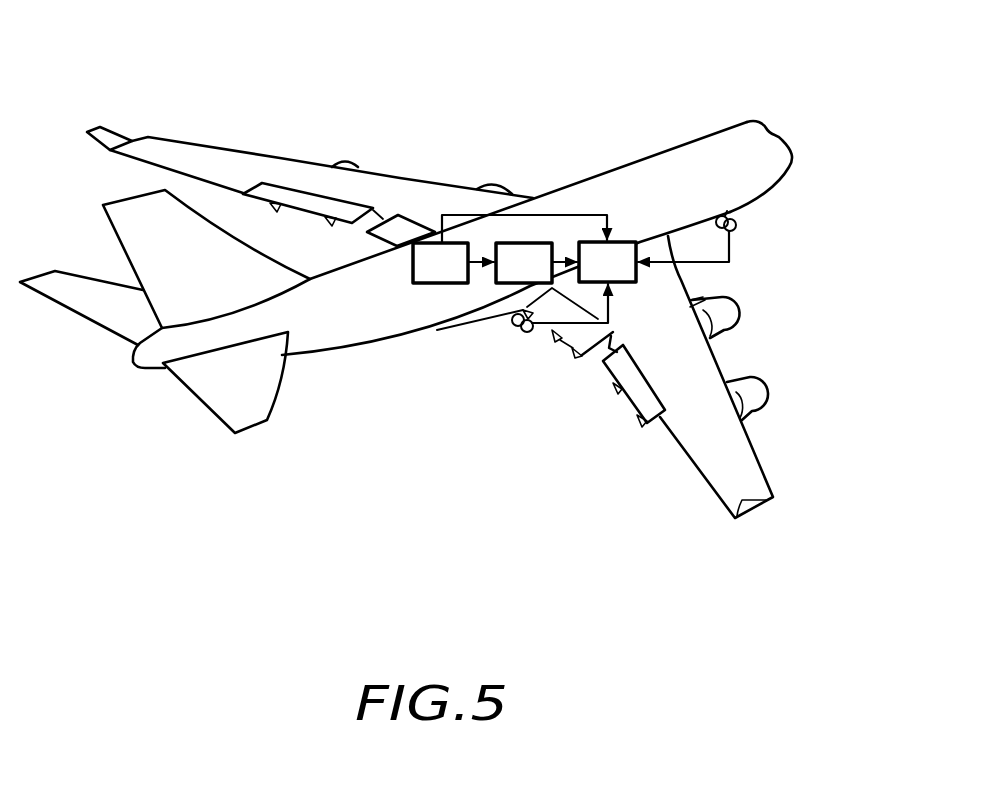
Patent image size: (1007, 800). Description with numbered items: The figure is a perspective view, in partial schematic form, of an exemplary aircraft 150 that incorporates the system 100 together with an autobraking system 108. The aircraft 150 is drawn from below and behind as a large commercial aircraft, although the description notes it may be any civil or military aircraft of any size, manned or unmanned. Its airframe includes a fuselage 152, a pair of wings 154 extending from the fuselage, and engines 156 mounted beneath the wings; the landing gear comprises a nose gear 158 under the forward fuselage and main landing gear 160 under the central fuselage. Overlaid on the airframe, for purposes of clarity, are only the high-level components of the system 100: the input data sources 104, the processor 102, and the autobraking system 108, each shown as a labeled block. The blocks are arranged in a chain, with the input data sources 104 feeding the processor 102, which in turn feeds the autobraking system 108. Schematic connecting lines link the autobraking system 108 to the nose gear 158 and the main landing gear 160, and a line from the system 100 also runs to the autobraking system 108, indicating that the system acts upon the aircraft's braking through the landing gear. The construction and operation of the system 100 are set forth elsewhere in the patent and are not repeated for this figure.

The system 100 is at (581, 207).
The processor 102 is at (541, 273).
The input data sources 104 is at (458, 273).
The autobraking system 108 is at (624, 273).
The aircraft 150 is at (798, 80).
The fuselage 152 is at (375, 304).
The wings 154 is at (221, 154).
The engines 156 is at (352, 159).
The nose gear 158 is at (748, 235).
The main landing gear 160 is at (513, 341).